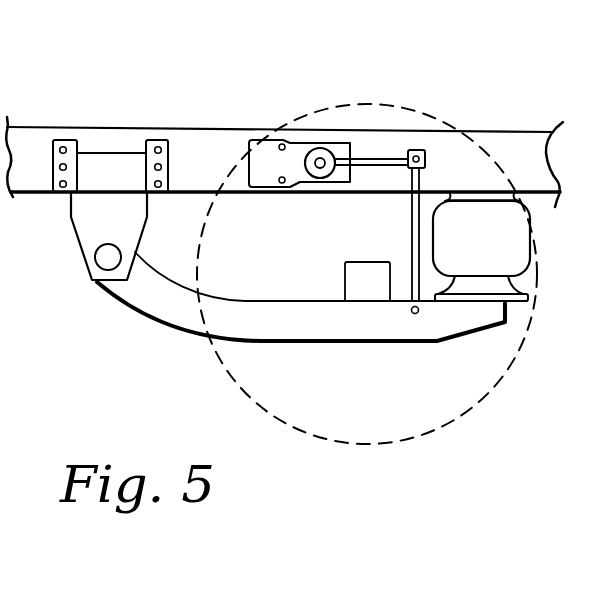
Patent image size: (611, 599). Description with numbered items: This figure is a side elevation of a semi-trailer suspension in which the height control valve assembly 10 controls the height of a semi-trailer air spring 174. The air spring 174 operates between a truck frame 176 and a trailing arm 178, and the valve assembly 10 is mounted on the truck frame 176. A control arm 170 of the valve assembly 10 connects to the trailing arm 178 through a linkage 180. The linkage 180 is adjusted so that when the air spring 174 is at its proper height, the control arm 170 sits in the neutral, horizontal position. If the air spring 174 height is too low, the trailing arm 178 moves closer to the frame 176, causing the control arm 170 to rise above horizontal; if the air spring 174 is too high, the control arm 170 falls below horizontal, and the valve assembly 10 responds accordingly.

The height control valve assembly 10 is at (310, 124).
The control arm 170 is at (380, 158).
The semi-trailer air spring 174 is at (521, 242).
The truck frame 176 is at (208, 137).
The trailing arm 178 is at (162, 310).
The linkage 180 is at (423, 183).